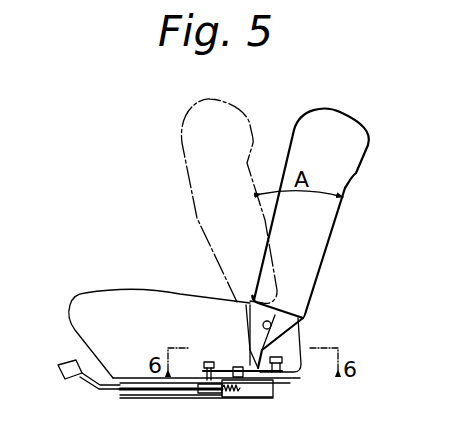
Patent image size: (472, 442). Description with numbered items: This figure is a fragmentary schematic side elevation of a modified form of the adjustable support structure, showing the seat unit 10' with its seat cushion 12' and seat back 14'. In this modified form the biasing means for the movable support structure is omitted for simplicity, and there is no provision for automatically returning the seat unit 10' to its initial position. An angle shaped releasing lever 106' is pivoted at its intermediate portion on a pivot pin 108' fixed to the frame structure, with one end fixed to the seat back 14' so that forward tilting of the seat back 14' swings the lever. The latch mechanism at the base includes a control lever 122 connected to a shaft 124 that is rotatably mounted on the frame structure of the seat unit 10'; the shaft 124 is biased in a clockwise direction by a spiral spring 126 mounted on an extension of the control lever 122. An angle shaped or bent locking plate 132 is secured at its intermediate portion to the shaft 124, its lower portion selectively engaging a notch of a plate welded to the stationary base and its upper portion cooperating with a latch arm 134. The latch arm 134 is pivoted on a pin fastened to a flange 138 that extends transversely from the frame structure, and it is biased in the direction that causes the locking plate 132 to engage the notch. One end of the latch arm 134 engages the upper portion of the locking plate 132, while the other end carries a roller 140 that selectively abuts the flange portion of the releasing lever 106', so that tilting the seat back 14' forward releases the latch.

The seat unit 10' is at (322, 213).
The seat cushion 12' is at (184, 312).
The seat back 14' is at (334, 253).
The releasing lever 106' is at (317, 338).
The pivot pin 108' is at (222, 317).
The control lever 122 is at (66, 372).
The shaft 124 is at (210, 397).
The spiral spring 126 is at (232, 398).
The locking plate 132 is at (184, 395).
The latch arm 134 is at (224, 362).
The flange 138 is at (260, 398).
The roller 140 is at (294, 366).